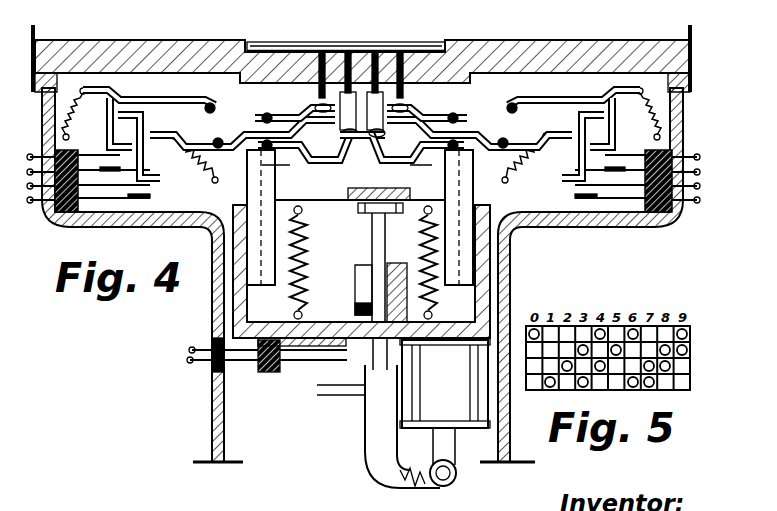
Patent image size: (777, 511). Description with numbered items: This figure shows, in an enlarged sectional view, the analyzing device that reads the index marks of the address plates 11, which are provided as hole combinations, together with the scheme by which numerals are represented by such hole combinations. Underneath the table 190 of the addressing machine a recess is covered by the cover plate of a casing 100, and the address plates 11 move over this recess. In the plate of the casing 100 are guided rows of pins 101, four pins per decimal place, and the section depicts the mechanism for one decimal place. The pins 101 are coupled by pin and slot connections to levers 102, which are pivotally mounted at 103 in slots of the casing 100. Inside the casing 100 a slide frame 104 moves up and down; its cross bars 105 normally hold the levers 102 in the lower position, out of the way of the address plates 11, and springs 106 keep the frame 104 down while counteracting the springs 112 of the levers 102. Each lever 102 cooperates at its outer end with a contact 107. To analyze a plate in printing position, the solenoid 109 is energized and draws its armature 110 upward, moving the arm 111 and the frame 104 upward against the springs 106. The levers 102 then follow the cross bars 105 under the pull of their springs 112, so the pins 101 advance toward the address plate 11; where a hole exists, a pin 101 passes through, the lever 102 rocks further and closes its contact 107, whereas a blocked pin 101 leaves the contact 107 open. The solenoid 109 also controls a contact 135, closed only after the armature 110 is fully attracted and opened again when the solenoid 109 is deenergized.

The address plates 11 is at (400, 44).
The casing 100 is at (488, 300).
The pins 101 is at (372, 52).
The levers 102 is at (296, 158).
The pivot 103 is at (205, 140).
The slide frame 104 is at (275, 226).
The cross bars 105 is at (455, 140).
The springs 106 is at (300, 255).
The contact 107 is at (108, 176).
The solenoid 109 is at (445, 383).
The armature 110 is at (448, 445).
The arm 111 is at (372, 281).
The springs 112 is at (93, 100).
The contact 135 is at (318, 352).
The table 190 is at (572, 52).